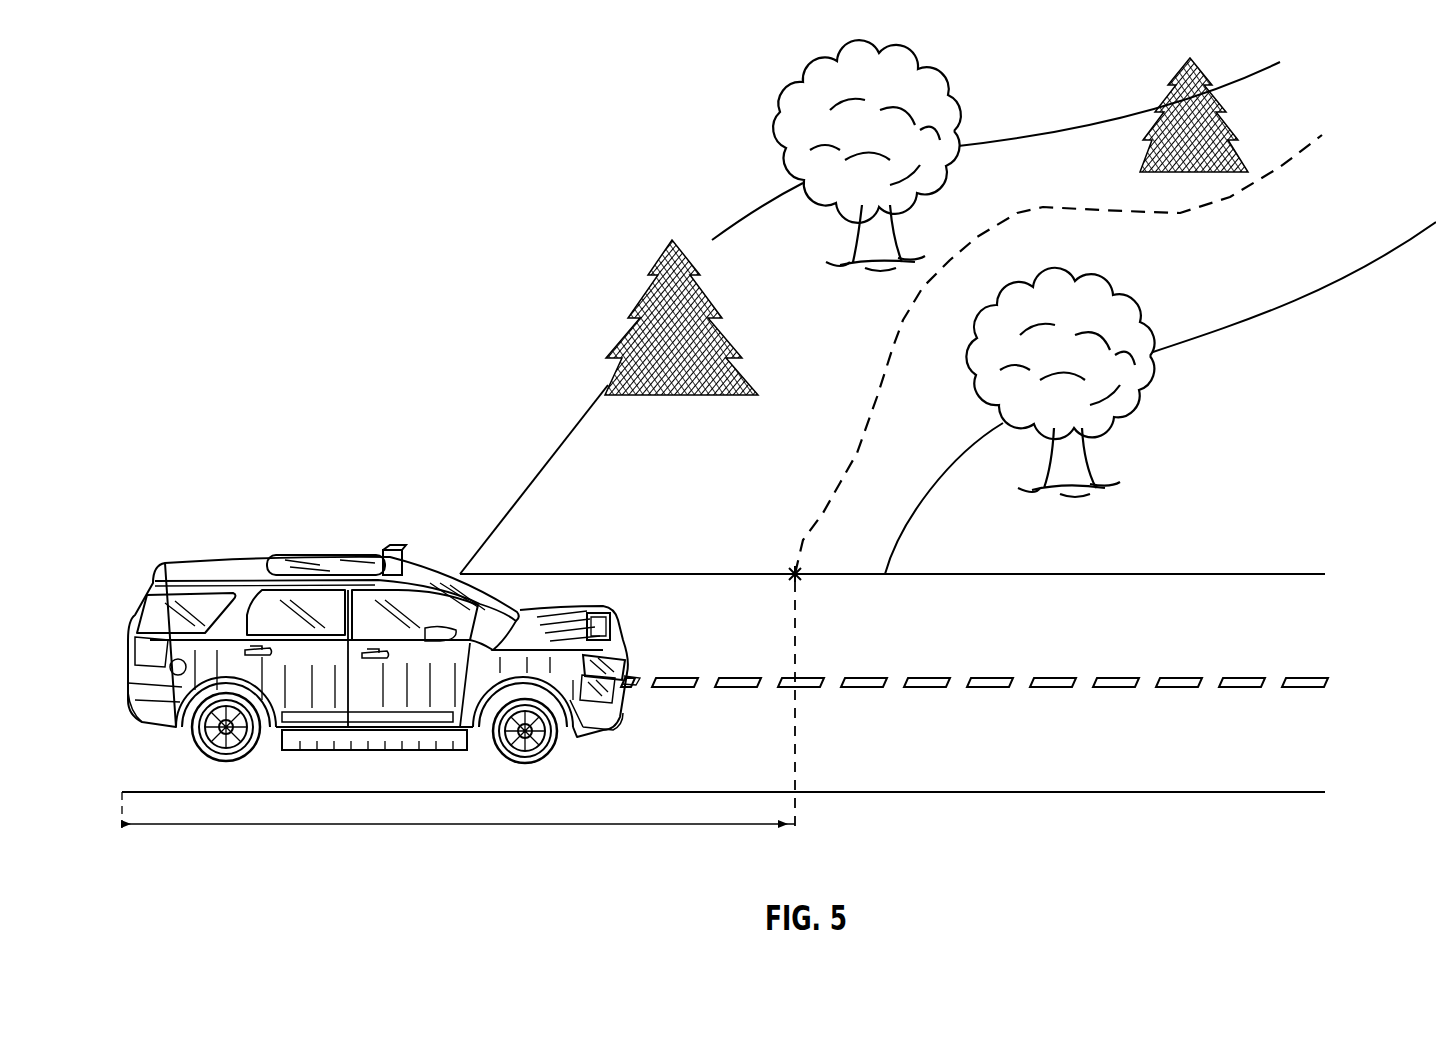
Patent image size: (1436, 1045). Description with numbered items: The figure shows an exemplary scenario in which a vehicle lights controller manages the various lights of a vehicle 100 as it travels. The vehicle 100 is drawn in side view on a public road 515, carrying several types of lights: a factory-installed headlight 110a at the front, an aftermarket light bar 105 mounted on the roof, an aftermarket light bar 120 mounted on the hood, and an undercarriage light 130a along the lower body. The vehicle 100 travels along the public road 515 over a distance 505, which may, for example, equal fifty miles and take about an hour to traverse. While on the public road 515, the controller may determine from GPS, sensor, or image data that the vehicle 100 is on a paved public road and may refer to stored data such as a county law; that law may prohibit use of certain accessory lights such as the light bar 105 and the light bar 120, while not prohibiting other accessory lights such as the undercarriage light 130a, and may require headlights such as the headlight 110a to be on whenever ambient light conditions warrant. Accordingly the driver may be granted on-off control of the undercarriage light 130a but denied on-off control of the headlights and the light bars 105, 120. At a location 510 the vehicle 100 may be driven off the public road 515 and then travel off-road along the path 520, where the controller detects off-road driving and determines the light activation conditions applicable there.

The vehicle 100 is at (381, 632).
The light bar 105 is at (392, 549).
The headlight 110a is at (597, 665).
The light bar 120 is at (609, 616).
The undercarriage light 130a is at (373, 752).
The distance 505 is at (440, 826).
The location 510 is at (789, 566).
The public road 515 is at (978, 573).
The path 520 is at (855, 450).